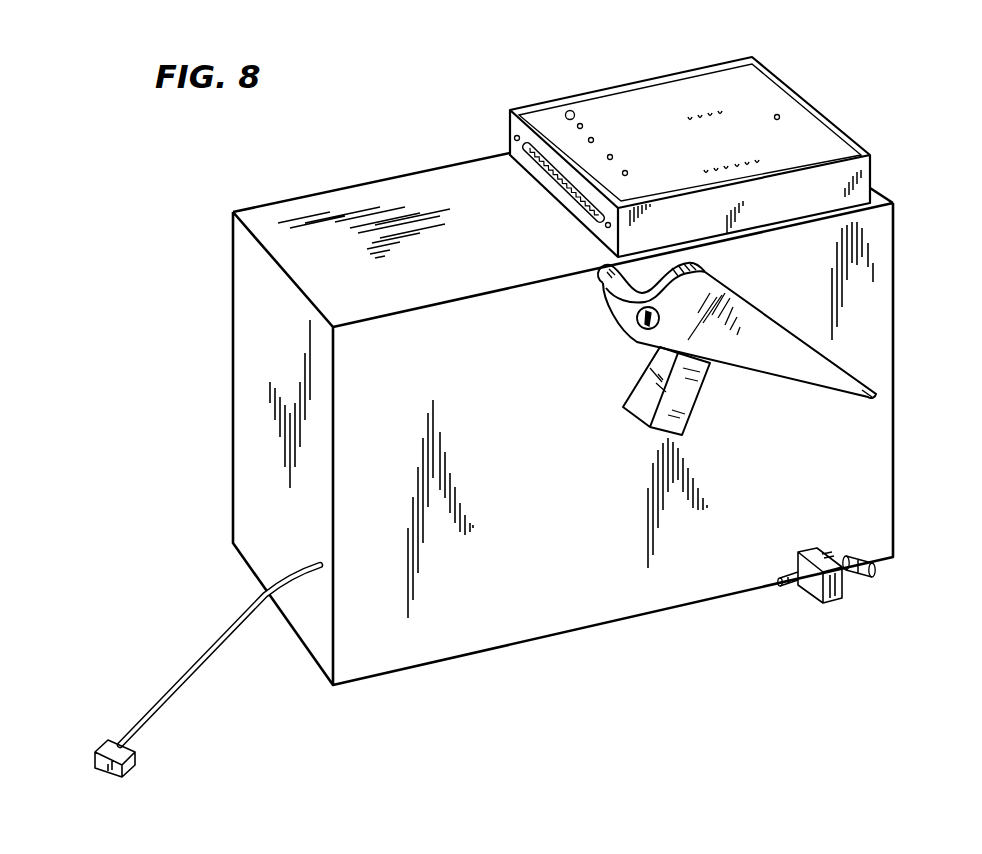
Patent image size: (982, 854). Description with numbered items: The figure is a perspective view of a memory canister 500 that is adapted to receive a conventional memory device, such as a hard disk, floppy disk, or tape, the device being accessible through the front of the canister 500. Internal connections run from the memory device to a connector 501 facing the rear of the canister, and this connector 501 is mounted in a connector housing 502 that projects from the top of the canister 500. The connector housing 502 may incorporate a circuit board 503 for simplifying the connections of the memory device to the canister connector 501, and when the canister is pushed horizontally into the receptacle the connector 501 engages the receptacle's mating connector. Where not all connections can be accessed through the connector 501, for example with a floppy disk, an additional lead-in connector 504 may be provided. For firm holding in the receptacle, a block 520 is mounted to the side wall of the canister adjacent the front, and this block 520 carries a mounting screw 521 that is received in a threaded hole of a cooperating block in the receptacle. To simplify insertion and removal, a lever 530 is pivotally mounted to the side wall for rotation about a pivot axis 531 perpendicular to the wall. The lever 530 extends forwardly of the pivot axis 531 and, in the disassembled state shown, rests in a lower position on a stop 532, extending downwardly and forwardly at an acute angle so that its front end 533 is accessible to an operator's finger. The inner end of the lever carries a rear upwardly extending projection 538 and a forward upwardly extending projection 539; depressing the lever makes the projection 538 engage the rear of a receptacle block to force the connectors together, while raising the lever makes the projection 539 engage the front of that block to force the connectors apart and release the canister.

The memory canister 500 is at (612, 607).
The connector 501 is at (510, 125).
The connector housing 502 is at (862, 175).
The circuit board 503 is at (627, 113).
The lead-in connector 504 is at (208, 660).
The block 520 is at (832, 605).
The mounting screw 521 is at (875, 575).
The lever 530 is at (780, 365).
The pivot axis 531 is at (636, 320).
The stop 532 is at (682, 440).
The front end of the lever 533 is at (877, 398).
The rear upwardly extending projection 538 is at (600, 262).
The forward upwardly extending projection 539 is at (707, 265).